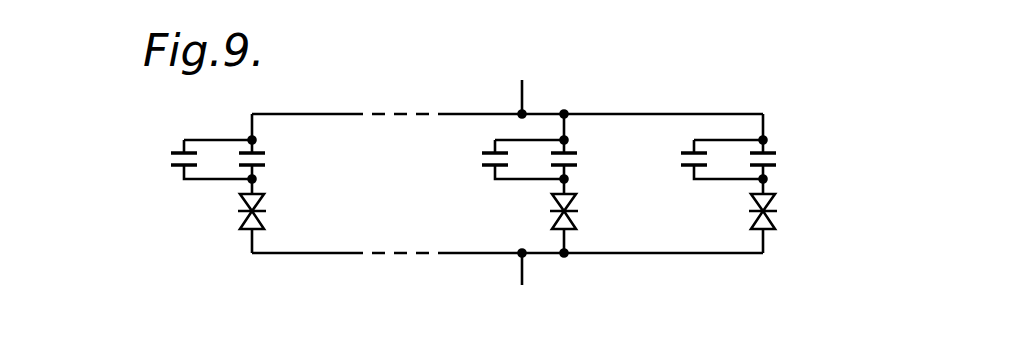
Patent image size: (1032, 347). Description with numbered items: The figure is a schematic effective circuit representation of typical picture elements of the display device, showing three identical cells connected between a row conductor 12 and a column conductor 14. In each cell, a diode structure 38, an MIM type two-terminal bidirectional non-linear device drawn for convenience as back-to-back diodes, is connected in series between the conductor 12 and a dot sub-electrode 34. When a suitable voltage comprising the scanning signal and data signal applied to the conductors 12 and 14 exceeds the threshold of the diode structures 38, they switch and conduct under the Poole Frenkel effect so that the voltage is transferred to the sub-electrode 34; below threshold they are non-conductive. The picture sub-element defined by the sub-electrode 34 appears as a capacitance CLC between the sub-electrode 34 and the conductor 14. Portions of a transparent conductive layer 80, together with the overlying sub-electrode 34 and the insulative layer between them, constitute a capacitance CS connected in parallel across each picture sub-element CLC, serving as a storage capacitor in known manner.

The row conductor 12 is at (519, 277).
The conductor 14 is at (527, 87).
The dot sub-electrode 34 is at (258, 179).
The diode structure 38 is at (240, 223).
The electrically-conductive layer 80 is at (442, 169).
The capacitance CS is at (693, 142).
The picture sub-element CLC is at (258, 153).